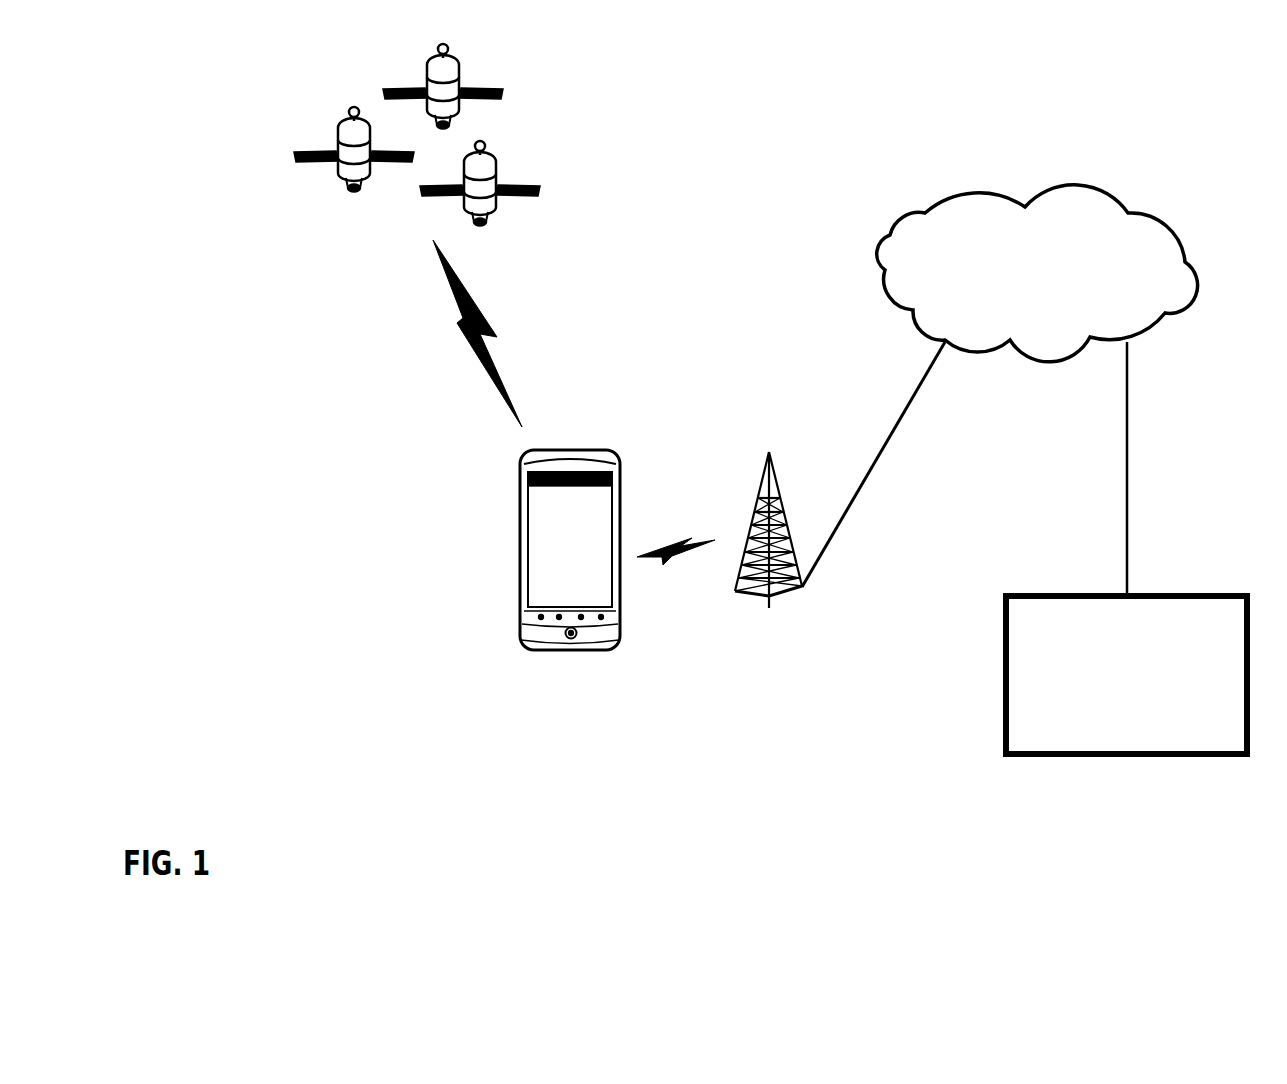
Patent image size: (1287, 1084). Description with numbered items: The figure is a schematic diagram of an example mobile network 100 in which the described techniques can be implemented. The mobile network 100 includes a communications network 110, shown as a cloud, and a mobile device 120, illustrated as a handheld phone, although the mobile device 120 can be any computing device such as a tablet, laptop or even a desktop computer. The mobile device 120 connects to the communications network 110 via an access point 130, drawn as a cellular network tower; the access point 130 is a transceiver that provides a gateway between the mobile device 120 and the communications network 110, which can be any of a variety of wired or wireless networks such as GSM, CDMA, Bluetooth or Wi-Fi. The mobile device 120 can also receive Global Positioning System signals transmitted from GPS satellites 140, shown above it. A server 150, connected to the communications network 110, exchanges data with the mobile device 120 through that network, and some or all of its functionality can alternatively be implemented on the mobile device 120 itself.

The mobile network 100 is at (810, 93).
The communications network 110 is at (1037, 273).
The mobile device 120 is at (550, 527).
The access point 130 is at (757, 590).
The GPS satellites 140 is at (348, 212).
The server 150 is at (1126, 675).